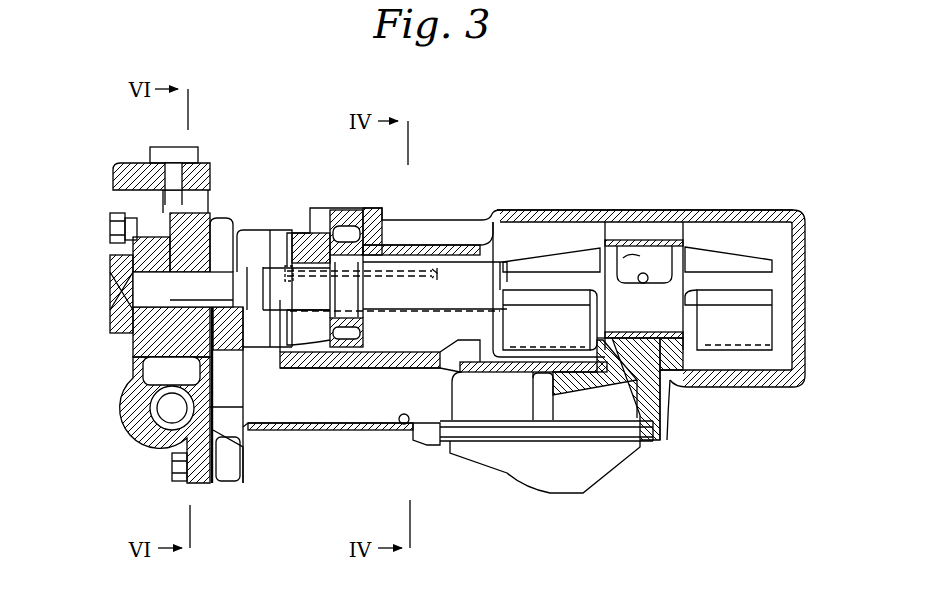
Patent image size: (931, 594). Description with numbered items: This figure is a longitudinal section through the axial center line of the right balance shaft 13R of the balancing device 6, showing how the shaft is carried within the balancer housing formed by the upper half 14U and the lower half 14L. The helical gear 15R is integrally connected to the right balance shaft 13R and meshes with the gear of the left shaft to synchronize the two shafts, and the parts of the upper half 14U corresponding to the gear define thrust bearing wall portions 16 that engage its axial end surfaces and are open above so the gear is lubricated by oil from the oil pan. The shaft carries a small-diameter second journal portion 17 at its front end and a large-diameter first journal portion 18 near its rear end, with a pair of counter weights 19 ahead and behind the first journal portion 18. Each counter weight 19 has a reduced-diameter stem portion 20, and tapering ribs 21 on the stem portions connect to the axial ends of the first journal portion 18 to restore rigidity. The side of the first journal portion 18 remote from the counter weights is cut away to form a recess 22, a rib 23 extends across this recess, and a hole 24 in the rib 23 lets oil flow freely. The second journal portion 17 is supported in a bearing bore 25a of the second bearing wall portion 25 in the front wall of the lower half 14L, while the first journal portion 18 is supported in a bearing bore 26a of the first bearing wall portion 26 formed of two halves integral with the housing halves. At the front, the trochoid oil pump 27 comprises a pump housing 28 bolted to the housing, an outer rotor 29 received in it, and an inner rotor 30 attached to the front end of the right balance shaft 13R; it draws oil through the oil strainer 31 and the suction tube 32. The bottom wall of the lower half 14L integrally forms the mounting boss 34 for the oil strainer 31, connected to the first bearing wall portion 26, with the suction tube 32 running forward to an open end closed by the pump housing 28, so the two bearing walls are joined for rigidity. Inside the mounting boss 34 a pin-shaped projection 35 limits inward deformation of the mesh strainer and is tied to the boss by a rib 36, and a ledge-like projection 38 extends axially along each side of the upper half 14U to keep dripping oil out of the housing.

The balancing device 6 is at (580, 112).
The right balance shaft 13R is at (467, 262).
The upper half of the balancer housing 14U is at (770, 212).
The lower half of the balancer housing 14L is at (798, 387).
The helical gear 15R is at (330, 340).
The thrust bearing wall portions 16 is at (335, 258).
The second journal portion 17 is at (278, 273).
The first journal portion 18 is at (735, 350).
The counter weights 19 is at (527, 342).
The stem portion 20 is at (535, 285).
The tapering ribs 21 is at (568, 265).
The recess 22 is at (658, 250).
The rib 23 is at (627, 256).
The hole 24 is at (638, 248).
The second bearing wall portion 25 is at (258, 322).
The bearing bore 25a is at (283, 350).
The first bearing wall portion 26 is at (680, 387).
The bearing bore 26a is at (673, 385).
The trochoid oil pump 27 is at (162, 303).
The pump housing 28 is at (137, 383).
The outer rotor 29 is at (150, 210).
The inner rotor 30 is at (140, 330).
The oil strainer 31 is at (600, 425).
The suction tube 32 is at (410, 424).
The mounting boss 34 is at (663, 382).
The pin-shaped projection 35 is at (543, 410).
The rib 36 is at (580, 383).
The ledge-like projection 38 is at (438, 268).